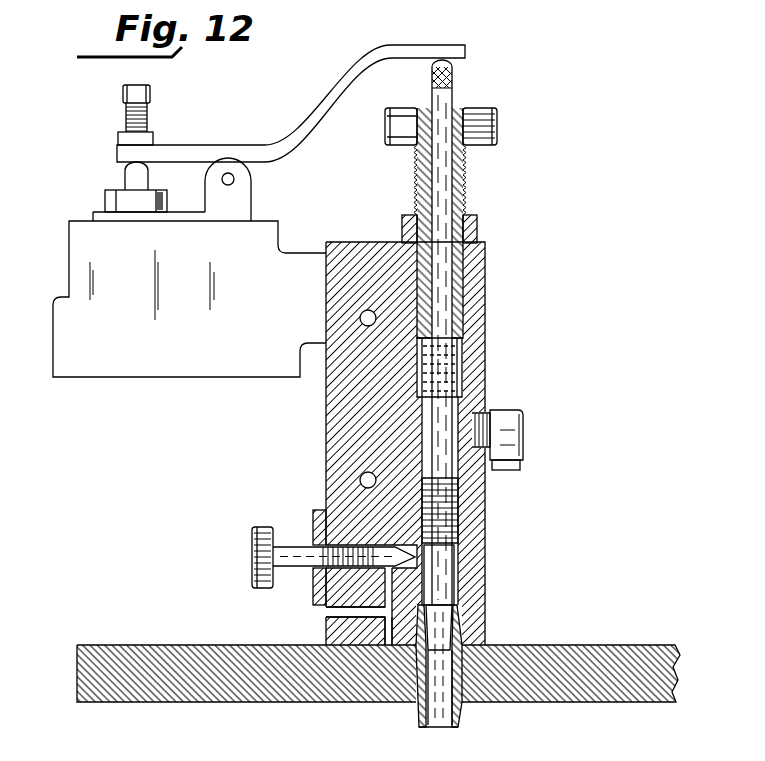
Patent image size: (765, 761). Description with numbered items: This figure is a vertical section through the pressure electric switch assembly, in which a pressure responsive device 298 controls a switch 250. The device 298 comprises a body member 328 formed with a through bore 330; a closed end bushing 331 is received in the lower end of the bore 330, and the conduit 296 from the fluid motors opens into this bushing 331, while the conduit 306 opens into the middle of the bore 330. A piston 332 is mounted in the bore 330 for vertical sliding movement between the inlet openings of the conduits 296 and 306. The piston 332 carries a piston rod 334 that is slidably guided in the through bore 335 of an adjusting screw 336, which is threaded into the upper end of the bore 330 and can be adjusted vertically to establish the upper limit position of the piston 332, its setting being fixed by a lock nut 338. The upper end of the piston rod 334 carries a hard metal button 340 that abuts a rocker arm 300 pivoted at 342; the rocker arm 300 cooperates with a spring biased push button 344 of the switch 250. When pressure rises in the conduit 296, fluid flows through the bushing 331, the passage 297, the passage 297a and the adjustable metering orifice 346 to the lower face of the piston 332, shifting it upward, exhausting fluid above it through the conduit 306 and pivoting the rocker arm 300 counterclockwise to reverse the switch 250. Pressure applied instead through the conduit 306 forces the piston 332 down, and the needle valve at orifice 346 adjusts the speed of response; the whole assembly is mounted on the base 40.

The base plate 40 is at (616, 694).
The switch 250 is at (150, 365).
The conduit 296 is at (437, 722).
The passage 297 is at (403, 614).
The passage 297a is at (328, 606).
The pressure responsive device 298 is at (485, 548).
The rocker arm 300 is at (305, 110).
The conduit 306 is at (520, 465).
The body member 328 is at (485, 361).
The through bore 330 is at (455, 573).
The closed end bushing 331 is at (453, 607).
The piston 332 is at (460, 500).
The piston rod 334 is at (447, 293).
The through bore 335 is at (450, 168).
The adjusting screw 336 is at (459, 198).
The lock nut 338 is at (476, 223).
The hard metal button 340 is at (452, 70).
The pivot 342 is at (234, 179).
The push button 344 is at (125, 172).
The adjustable metering orifice 346 is at (395, 550).